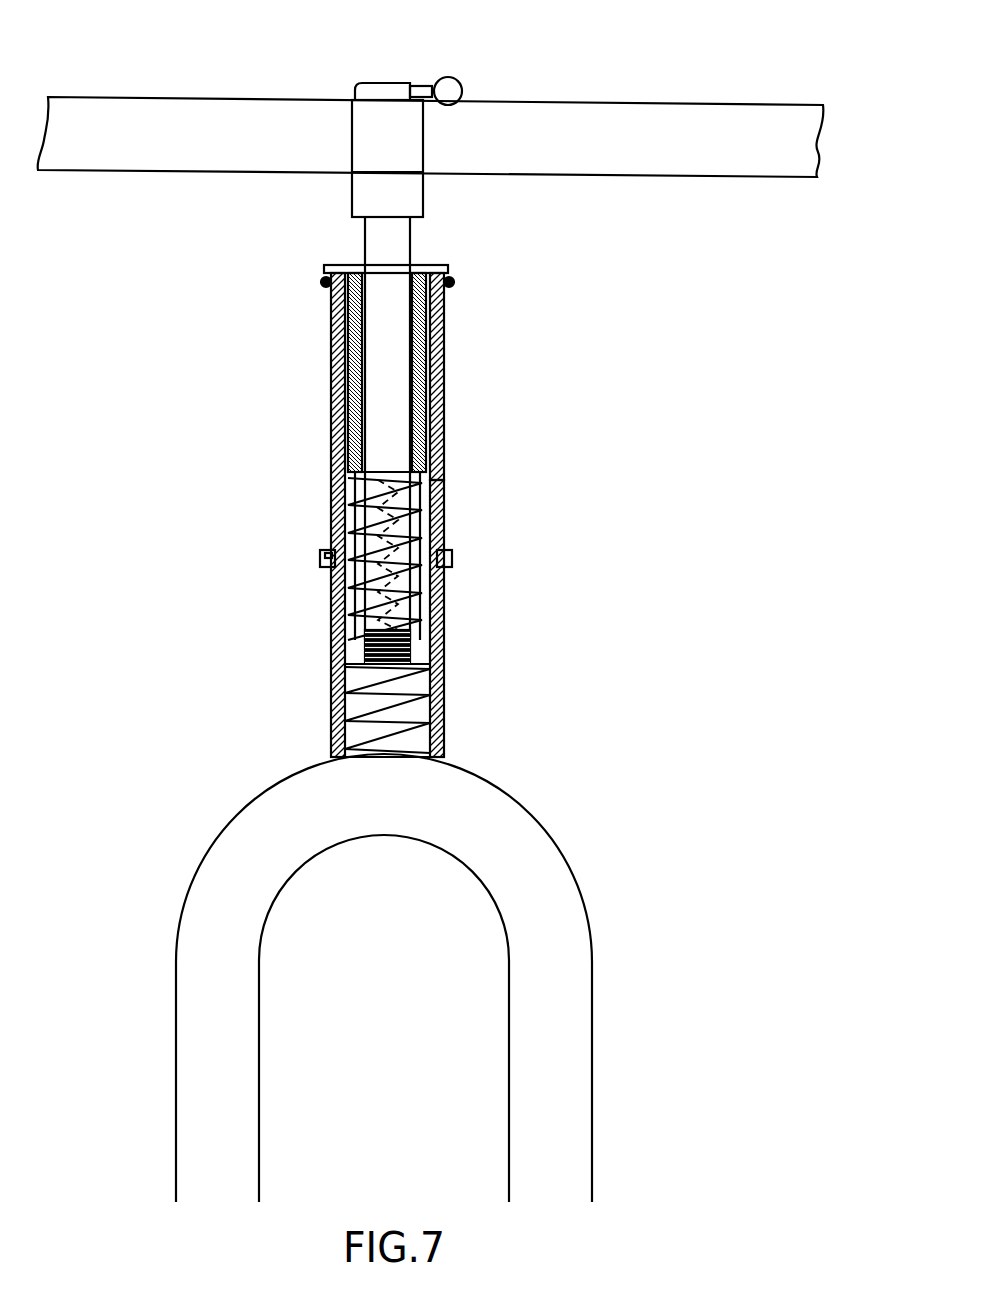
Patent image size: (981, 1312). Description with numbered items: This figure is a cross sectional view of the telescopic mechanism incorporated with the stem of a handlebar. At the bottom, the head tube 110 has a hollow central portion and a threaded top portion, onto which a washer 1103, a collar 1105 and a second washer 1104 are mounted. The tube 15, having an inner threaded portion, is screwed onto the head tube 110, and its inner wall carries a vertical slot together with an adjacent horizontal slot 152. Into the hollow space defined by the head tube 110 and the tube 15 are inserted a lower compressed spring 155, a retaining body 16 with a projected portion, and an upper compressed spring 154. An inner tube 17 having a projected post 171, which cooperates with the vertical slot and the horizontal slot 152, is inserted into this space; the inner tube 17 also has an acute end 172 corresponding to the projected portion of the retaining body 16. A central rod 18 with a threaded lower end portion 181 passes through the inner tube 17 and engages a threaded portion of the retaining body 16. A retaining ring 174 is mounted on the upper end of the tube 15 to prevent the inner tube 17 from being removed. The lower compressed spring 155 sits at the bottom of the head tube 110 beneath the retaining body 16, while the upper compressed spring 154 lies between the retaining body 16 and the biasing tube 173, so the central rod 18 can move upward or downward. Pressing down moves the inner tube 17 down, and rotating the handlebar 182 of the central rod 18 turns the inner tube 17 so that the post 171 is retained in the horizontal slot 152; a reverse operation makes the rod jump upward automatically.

The tube 15 is at (331, 367).
The retaining body 16 is at (443, 618).
The inner tube 17 is at (433, 397).
The central rod 18 is at (388, 364).
The head tube 110 is at (368, 648).
The horizontal slot 152 is at (443, 500).
The upper compressed spring 154 is at (443, 530).
The lower compressed spring 155 is at (443, 715).
The projected post 171 is at (443, 453).
The acute end 172 is at (443, 583).
The biasing tube 173 is at (444, 330).
The retaining ring 174 is at (451, 268).
The threaded lower end portion 181 is at (340, 706).
The handlebar 182 is at (447, 90).
The washer 1103 is at (327, 568).
The washer 1104 is at (330, 541).
The collar 1105 is at (322, 555).